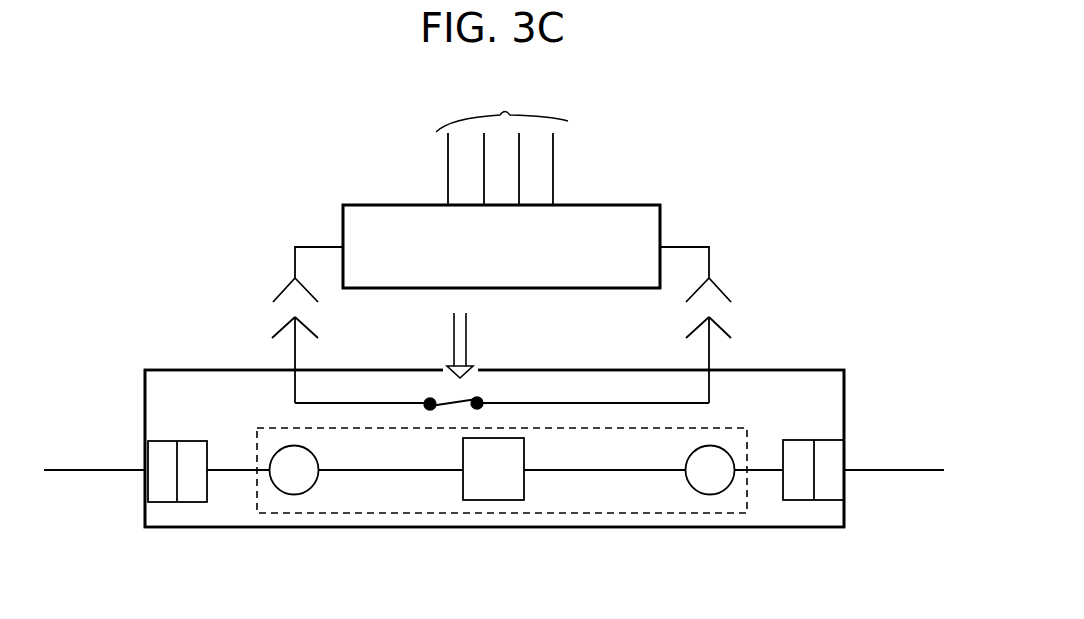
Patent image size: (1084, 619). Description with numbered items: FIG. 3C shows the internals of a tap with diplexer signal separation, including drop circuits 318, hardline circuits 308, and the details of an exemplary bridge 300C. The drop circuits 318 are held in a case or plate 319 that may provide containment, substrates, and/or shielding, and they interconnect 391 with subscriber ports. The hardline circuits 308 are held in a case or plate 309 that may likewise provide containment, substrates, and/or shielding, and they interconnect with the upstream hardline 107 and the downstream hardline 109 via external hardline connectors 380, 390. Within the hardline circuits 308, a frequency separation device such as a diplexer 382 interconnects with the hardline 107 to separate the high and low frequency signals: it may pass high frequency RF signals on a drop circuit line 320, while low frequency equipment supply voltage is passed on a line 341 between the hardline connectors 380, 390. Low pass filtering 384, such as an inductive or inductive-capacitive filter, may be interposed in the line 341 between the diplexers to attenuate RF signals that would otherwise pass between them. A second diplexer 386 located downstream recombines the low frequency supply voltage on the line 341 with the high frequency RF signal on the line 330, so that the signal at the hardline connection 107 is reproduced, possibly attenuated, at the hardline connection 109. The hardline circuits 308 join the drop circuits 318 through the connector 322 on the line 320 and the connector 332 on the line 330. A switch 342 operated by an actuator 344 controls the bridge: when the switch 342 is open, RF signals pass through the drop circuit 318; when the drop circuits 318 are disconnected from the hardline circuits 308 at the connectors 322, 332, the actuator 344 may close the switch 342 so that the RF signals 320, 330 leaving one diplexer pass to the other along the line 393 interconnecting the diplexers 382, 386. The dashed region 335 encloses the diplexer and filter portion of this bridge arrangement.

The bridge 300C is at (784, 128).
The case or plate 319 is at (627, 205).
The drop circuits 318 is at (640, 274).
The interconnection with subscriber ports 391 is at (502, 145).
The connector 322 is at (274, 305).
The connector 332 is at (735, 310).
The drop circuit line 320 is at (288, 357).
The line 330 is at (716, 396).
The actuator 344 is at (476, 343).
The switch 342 is at (485, 386).
The case or plate 309 is at (765, 370).
The hardline circuits 308 is at (834, 402).
The line 393 is at (343, 402).
The line 341 is at (343, 469).
The sensing circuit 335 is at (594, 512).
The hardline connector 380 is at (190, 502).
The diplexer 382 is at (298, 486).
The low pass filtering 384 is at (512, 500).
The diplexer 386 is at (720, 496).
The hardline connector 390 is at (796, 502).
The hardline 107 is at (72, 470).
The hardline 109 is at (869, 470).